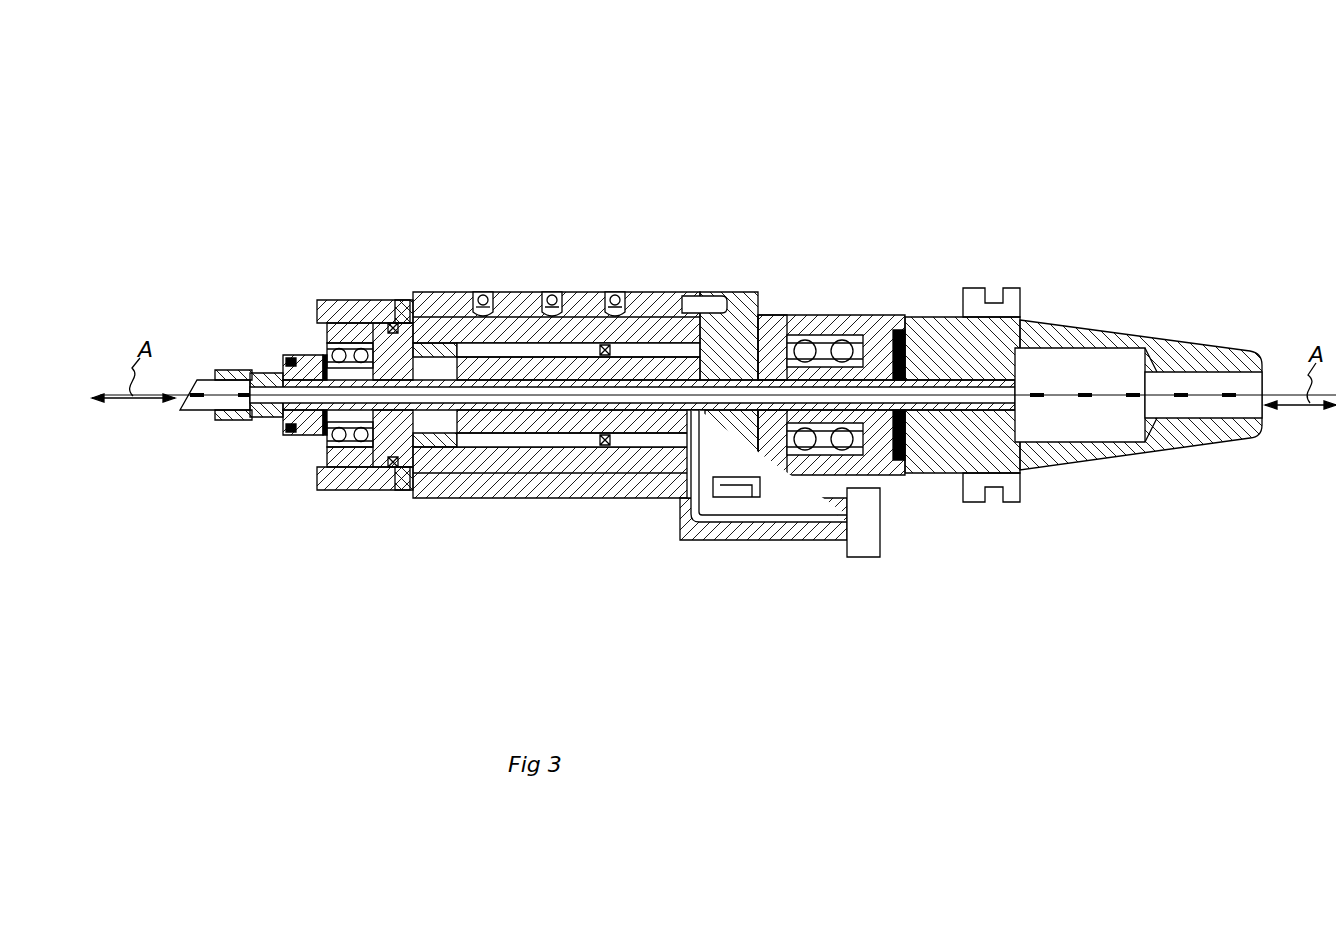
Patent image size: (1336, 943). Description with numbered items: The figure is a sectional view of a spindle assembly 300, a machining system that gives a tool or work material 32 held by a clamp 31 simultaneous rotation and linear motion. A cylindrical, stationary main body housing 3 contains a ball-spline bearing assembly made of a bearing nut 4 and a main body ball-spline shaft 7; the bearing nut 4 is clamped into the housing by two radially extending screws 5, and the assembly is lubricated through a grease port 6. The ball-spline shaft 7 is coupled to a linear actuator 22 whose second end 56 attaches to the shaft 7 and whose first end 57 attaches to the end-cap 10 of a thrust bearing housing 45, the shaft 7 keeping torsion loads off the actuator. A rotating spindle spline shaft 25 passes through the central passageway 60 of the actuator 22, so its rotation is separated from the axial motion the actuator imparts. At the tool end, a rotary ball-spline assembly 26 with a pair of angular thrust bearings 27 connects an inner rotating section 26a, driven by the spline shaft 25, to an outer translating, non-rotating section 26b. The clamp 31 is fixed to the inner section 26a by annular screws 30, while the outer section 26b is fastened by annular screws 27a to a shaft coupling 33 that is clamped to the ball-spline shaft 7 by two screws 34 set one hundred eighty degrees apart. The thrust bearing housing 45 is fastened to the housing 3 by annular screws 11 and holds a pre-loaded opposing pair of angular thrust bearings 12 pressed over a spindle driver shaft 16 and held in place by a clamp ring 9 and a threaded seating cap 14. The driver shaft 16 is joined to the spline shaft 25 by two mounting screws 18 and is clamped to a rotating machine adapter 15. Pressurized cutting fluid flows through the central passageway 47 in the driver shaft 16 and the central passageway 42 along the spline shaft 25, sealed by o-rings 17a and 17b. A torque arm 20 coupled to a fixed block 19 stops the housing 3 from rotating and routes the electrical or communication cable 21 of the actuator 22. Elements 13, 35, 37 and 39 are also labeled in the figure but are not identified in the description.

The main body housing 3 is at (644, 380).
The bearing nut 4 is at (458, 292).
The radially extending screws 5 is at (485, 292).
The grease port 6 is at (552, 292).
The main body ball-spline shaft 7 is at (586, 357).
The clamp ring 9 is at (765, 315).
The main body end-cap 10 is at (722, 296).
The annular screws 11 is at (710, 300).
The angular thrust bearings 12 is at (790, 315).
The ball bearing 13 is at (878, 335).
The seating cap 14 is at (925, 317).
The machine adapter 15 is at (997, 288).
The spindle driver shaft 16 is at (994, 502).
The o-ring 17a is at (902, 462).
The o-ring 17b is at (291, 432).
The mounting screws 18 is at (732, 497).
The fixed block 19 is at (870, 536).
The torque arm 20 is at (810, 522).
The electrical and/or communication cable 21 is at (770, 540).
The linear actuator 22 is at (668, 433).
The rotating spindle spline shaft 25 is at (562, 433).
The rotary ball-spline assembly 26 is at (378, 470).
The inner rotating section 26a is at (312, 355).
The outer translating section 26b is at (345, 300).
The angular thrust bearings 27 is at (330, 343).
The annular screws 27a is at (348, 447).
The annular screws 30 is at (286, 373).
The clamp 31 is at (240, 370).
The tool or work material 32 is at (233, 404).
The shaft coupling 33 is at (370, 343).
The screws 34 is at (395, 300).
The duct 35 is at (635, 433).
The tool taper 37 is at (1255, 313).
The tool end 39 is at (120, 320).
The axially extending central passageway 42 is at (530, 343).
The thrust bearing housing 45 is at (828, 312).
The axially extending central passageway 47 is at (1030, 370).
The second end 56 is at (432, 343).
The first end 57 is at (685, 300).
The central passageway 60 is at (603, 345).
The spindle assembly 300 is at (1093, 160).